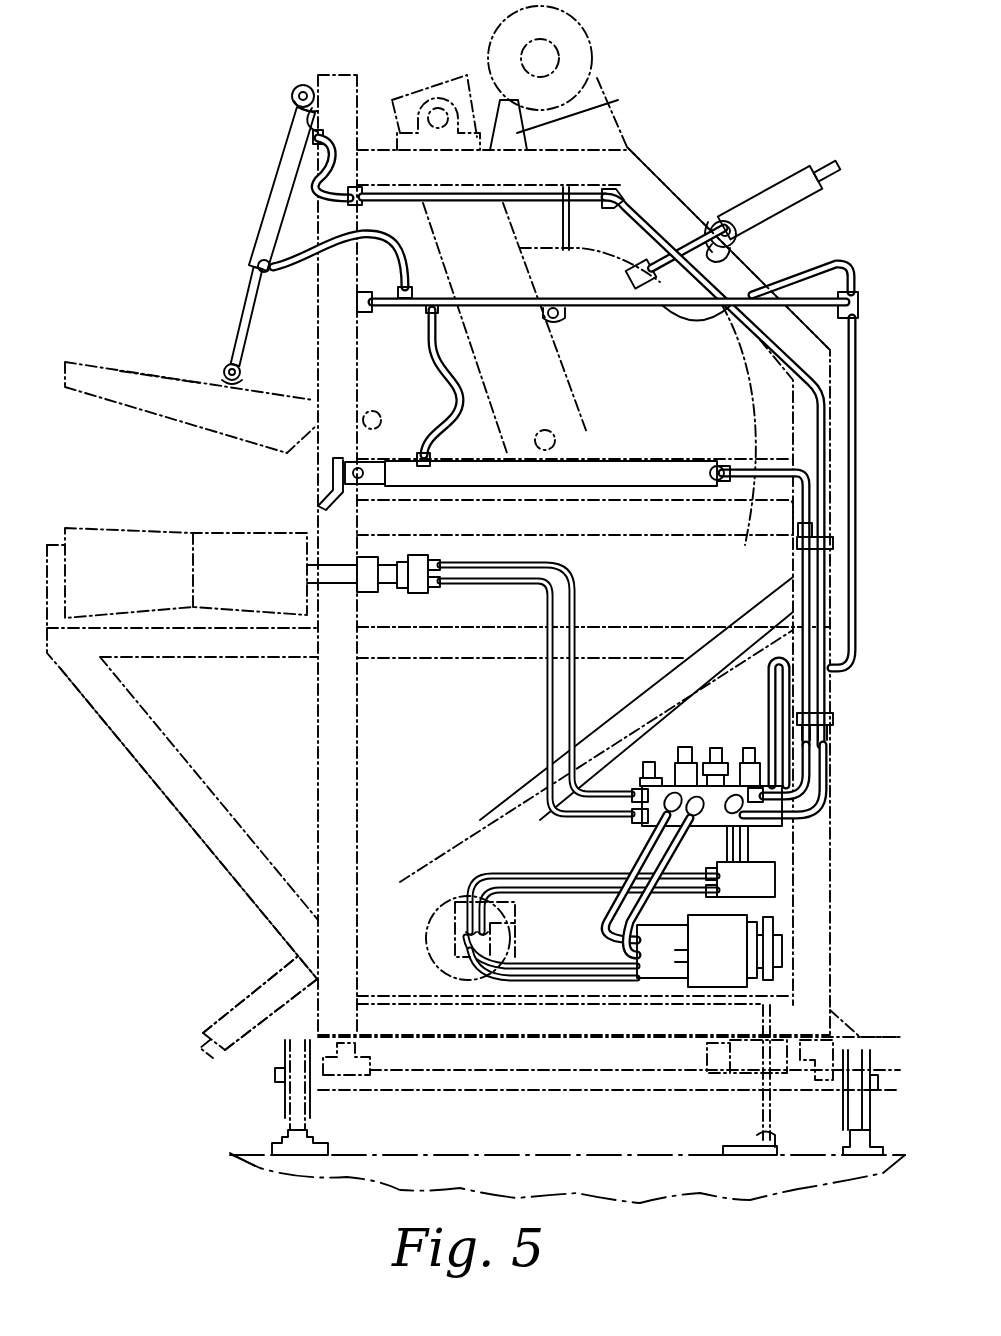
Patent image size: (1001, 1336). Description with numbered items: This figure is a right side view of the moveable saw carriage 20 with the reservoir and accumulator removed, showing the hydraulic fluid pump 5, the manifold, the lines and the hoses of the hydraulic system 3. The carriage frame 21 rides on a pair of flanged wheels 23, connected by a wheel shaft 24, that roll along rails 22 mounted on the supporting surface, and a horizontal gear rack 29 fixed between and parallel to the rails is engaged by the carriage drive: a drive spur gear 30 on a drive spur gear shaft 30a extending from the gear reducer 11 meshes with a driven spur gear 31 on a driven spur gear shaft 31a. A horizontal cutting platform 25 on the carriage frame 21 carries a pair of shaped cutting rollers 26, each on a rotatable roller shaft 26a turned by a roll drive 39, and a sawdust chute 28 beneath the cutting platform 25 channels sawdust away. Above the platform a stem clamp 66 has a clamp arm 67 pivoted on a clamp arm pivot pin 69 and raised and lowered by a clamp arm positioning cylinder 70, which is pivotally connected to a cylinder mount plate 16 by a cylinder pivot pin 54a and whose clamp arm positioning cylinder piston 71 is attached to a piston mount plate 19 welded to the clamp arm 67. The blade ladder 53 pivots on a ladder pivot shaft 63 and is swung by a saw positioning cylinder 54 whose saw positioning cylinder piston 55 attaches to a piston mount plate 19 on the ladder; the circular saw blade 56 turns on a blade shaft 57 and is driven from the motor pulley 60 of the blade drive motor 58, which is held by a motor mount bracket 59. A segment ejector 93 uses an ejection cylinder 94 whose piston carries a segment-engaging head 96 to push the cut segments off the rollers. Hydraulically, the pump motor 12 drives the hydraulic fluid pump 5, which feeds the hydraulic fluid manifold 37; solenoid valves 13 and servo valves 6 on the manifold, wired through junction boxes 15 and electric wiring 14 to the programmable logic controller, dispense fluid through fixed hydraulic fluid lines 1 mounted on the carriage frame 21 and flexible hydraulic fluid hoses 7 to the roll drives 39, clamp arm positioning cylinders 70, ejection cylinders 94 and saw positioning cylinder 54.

The fixed hydraulic fluid lines 1 is at (645, 308).
The hydraulic system 3 is at (497, 852).
The hydraulic fluid pump 5 is at (645, 903).
The servo valves 6 is at (740, 758).
The flexible hydraulic fluid hoses 7 is at (332, 150).
The gear reducer 11 is at (728, 961).
The pump motor 12 is at (440, 948).
The solenoid valves 13 is at (640, 770).
The electric wiring 14 is at (598, 883).
The junction boxes 15 is at (760, 893).
The cylinder mount plate 16 is at (288, 108).
The piston mount plate 19 is at (243, 377).
The moveable saw carriage 20 is at (107, 755).
The carriage frame 21 is at (677, 186).
The rails 22 is at (298, 1128).
The flanged wheels 23 is at (285, 1085).
The wheel shaft 24 is at (275, 1074).
The horizontal cutting platform 25 is at (395, 662).
The shaped cutting rollers 26 is at (145, 517).
The rotatable roller shaft 26a is at (307, 585).
The sawdust chute 28 is at (270, 975).
The horizontal gear rack 29 is at (750, 1143).
The drive spur gear 30 is at (793, 923).
The drive spur gear shaft 30a is at (788, 963).
The driven spur gear 31 is at (751, 1102).
The driven spur gear shaft 31a is at (730, 1062).
The hydraulic fluid manifold 37 is at (679, 771).
The roll drive 39 is at (420, 560).
The blade ladder 53 is at (583, 438).
The saw positioning cylinder 54 is at (770, 200).
The cylinder pivot pin 54a is at (292, 88).
The saw positioning cylinder piston 55 is at (620, 278).
The circular saw blade 56 is at (400, 288).
The blade shaft 57 is at (540, 433).
The blade drive motor 58 is at (588, 30).
The motor mount bracket 59 is at (628, 128).
The motor pulley 60 is at (560, 60).
The ladder pivot shaft 63 is at (435, 108).
The stem clamps 66 is at (118, 358).
The clamp arm 67 is at (162, 343).
The clamp arm pivot pin 69 is at (374, 410).
The clamp arm positioning cylinder 70 is at (270, 205).
The clamp arm positioning cylinder piston 71 is at (252, 325).
The segment ejector 93 is at (708, 465).
The ejection cylinder 94 is at (646, 455).
The segment-engaging head 96 is at (380, 455).